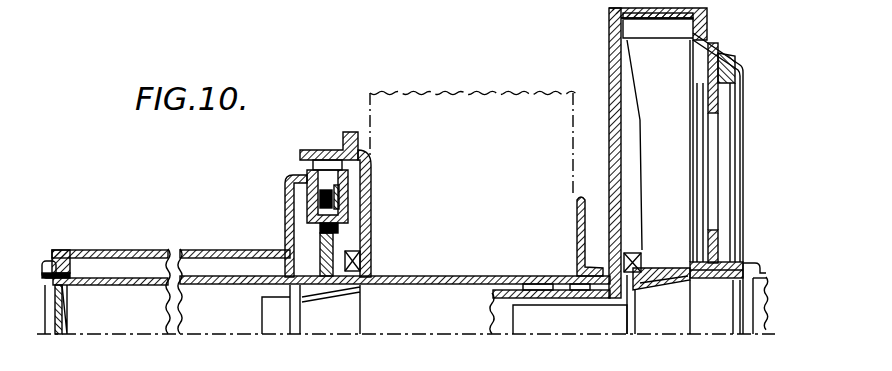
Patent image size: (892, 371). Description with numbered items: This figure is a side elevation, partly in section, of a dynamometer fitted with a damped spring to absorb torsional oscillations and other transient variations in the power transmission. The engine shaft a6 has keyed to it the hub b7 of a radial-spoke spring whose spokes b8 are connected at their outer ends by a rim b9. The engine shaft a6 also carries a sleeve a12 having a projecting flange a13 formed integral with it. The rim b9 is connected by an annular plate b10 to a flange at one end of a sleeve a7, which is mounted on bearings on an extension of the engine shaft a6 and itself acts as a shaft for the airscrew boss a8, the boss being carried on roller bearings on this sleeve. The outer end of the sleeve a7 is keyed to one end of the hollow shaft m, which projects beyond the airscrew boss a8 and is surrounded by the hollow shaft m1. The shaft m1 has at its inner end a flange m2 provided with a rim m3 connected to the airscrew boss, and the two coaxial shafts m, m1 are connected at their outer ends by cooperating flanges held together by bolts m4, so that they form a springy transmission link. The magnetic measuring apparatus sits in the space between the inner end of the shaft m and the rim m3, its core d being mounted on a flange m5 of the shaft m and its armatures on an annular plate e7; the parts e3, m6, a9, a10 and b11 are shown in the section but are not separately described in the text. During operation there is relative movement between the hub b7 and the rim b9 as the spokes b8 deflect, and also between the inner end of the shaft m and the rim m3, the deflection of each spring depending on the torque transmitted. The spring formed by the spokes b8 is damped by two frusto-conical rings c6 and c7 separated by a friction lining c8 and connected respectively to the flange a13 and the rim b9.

The hollow shaft m is at (211, 286).
The hollow shaft m1 is at (200, 250).
The flange m2 is at (290, 188).
The rim m3 is at (330, 150).
The bolts m4 is at (67, 256).
The flange m5 is at (320, 240).
The lower bracket m6 is at (340, 288).
The core d is at (320, 206).
The inner cup e3 is at (303, 178).
The annular plate e7 is at (300, 157).
The engine shaft a6 is at (722, 308).
The sleeve a7 is at (513, 305).
The airscrew boss a8 is at (372, 210).
The wedge block a9 is at (637, 288).
The spacer block a10 is at (368, 252).
The sleeve a12 is at (760, 283).
The projecting flange a13 is at (695, 250).
The hub b7 is at (678, 280).
The spokes b8 is at (655, 165).
The rim b9 is at (608, 12).
The annular plate b10 is at (615, 72).
The vertical rod b11 is at (608, 237).
The frusto-conical ring c6 is at (725, 85).
The frusto-conical ring c7 is at (720, 60).
The friction lining c8 is at (710, 60).